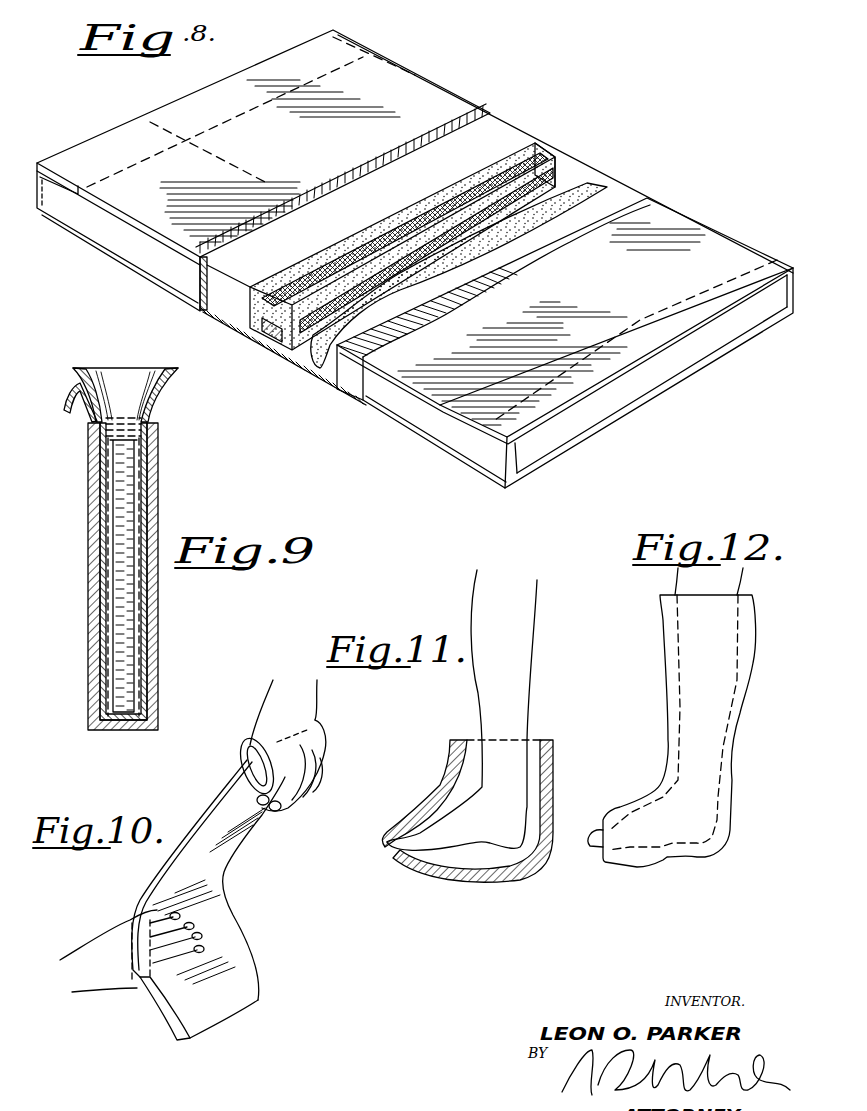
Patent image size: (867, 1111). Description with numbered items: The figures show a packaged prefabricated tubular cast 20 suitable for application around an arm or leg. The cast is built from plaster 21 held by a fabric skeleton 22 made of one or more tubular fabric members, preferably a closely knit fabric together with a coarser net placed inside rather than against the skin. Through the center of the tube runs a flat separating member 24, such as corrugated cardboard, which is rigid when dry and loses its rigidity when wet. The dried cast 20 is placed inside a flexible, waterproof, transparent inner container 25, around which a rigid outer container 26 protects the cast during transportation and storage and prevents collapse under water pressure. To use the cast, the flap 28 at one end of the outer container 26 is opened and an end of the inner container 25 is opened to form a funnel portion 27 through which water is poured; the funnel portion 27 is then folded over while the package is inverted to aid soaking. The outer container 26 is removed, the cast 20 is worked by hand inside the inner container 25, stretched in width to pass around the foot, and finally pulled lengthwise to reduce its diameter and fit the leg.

In FIG. 8, the packaged prefabricated tubular cast 20 is at (290, 337).
In FIG. 11, the packaged prefabricated tubular cast 20 is at (463, 887).
In FIG. 12, the packaged prefabricated tubular cast 20 is at (667, 852).
In FIG. 8, the plaster 21 is at (263, 327).
In FIG. 8, the fabric skeleton 22 is at (257, 313).
In FIG. 8, the separating member 24 is at (547, 173).
In FIG. 8, the inner container 25 is at (440, 182).
In FIG. 9, the inner container 25 is at (100, 630).
In FIG. 10, the inner container 25 is at (248, 982).
In FIG. 8, the outer container 26 is at (153, 265).
In FIG. 9, the outer container 26 is at (88, 569).
In FIG. 9, the funnel portion 27 is at (160, 383).
In FIG. 10, the funnel portion 27 is at (253, 772).
In FIG. 9, the flap 28 is at (65, 412).